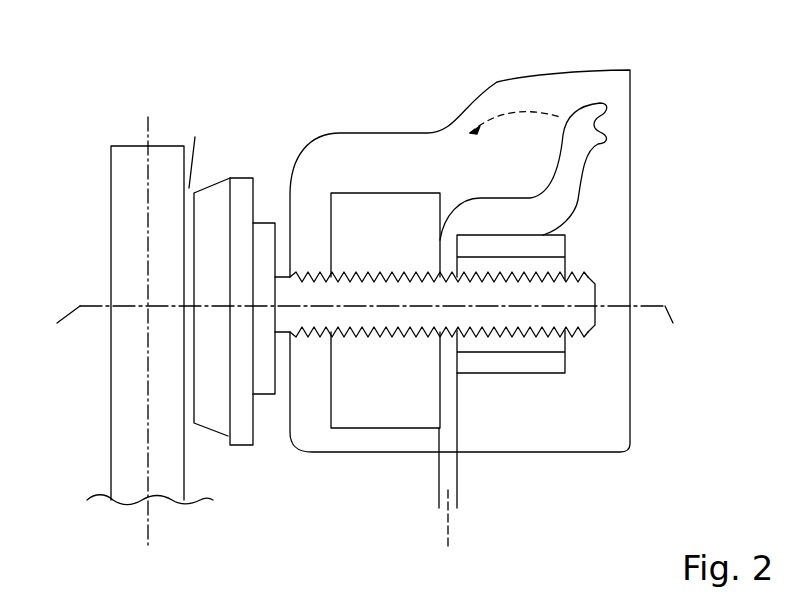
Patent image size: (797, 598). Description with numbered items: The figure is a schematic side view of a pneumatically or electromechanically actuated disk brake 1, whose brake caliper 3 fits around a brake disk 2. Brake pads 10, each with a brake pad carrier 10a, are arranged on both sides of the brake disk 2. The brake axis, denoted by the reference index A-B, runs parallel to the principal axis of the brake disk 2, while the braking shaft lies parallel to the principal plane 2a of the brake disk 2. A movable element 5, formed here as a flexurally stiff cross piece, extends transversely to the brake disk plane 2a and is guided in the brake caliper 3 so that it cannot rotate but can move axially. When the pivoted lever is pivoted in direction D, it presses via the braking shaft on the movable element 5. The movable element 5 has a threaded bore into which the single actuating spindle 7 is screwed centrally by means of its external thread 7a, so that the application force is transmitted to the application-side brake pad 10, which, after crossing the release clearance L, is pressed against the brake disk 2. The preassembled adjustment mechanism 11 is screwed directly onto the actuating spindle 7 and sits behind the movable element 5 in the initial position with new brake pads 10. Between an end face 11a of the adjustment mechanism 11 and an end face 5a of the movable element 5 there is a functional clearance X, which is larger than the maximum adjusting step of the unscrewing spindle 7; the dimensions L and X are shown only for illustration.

The disk brake 1 is at (450, 63).
The brake disk 2 is at (118, 146).
The principal plane of the brake disk 2a is at (148, 177).
The brake caliper 3 is at (545, 63).
The movable element 5 is at (356, 220).
The end face of the movable element 5a is at (437, 483).
The actuating spindle 7 is at (300, 313).
The external thread 7a is at (588, 327).
The brake pad 10 is at (209, 402).
The brake pad carrier 10a is at (240, 420).
The adjustment mechanism 11 is at (577, 238).
The end face of the adjustment mechanism 11a is at (458, 478).
The brake axis reference point A is at (345, 323).
The brake axis reference point B is at (680, 317).
The pivoting direction D is at (516, 110).
The release clearance L is at (203, 158).
The functional clearance X is at (460, 524).